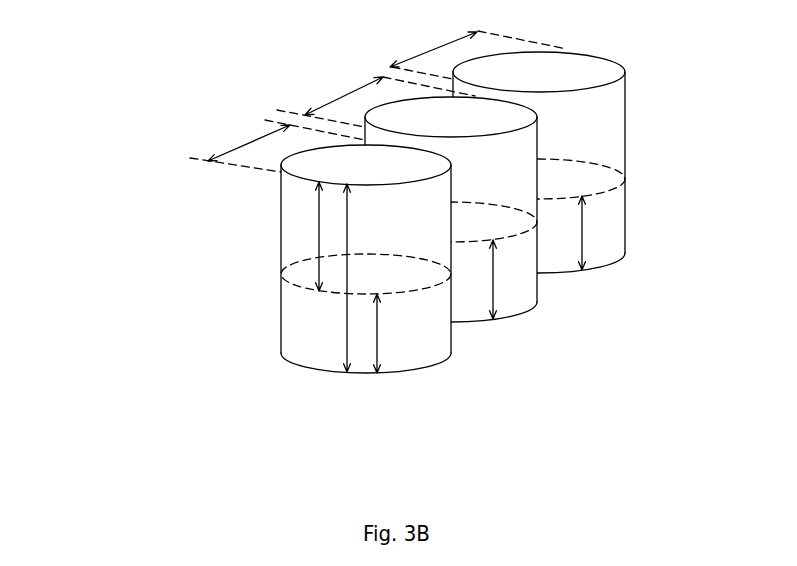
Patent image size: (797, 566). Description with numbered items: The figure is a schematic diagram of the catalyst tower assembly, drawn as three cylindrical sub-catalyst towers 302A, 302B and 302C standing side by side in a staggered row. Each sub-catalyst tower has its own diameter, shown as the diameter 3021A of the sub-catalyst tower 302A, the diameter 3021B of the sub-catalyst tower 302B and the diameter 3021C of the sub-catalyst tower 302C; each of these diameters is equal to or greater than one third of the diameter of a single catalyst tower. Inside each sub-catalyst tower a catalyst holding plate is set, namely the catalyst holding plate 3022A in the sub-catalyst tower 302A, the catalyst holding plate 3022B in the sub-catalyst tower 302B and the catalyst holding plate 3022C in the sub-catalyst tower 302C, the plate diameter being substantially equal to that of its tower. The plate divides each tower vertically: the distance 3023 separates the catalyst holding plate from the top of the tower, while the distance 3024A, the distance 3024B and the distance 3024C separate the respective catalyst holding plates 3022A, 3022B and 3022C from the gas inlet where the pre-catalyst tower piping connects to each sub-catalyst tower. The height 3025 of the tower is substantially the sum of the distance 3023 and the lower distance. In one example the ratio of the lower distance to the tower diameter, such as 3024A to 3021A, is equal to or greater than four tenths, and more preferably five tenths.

The sub-catalyst tower 302A is at (442, 230).
The sub-catalyst tower 302B is at (523, 190).
The sub-catalyst tower 302C is at (616, 137).
The diameter of the sub-catalyst tower 3021A is at (250, 144).
The diameter of the sub-catalyst tower 3021B is at (383, 77).
The diameter of the sub-catalyst tower 3021C is at (450, 46).
The catalyst holding plate 3022A is at (407, 293).
The catalyst holding plate 3022B is at (512, 240).
The catalyst holding plate 3022C is at (603, 192).
The distance 3023 is at (318, 222).
The distance 3024A is at (377, 332).
The distance 3024B is at (493, 285).
The distance 3024C is at (583, 240).
The height of the catalyst tower 3025 is at (347, 323).